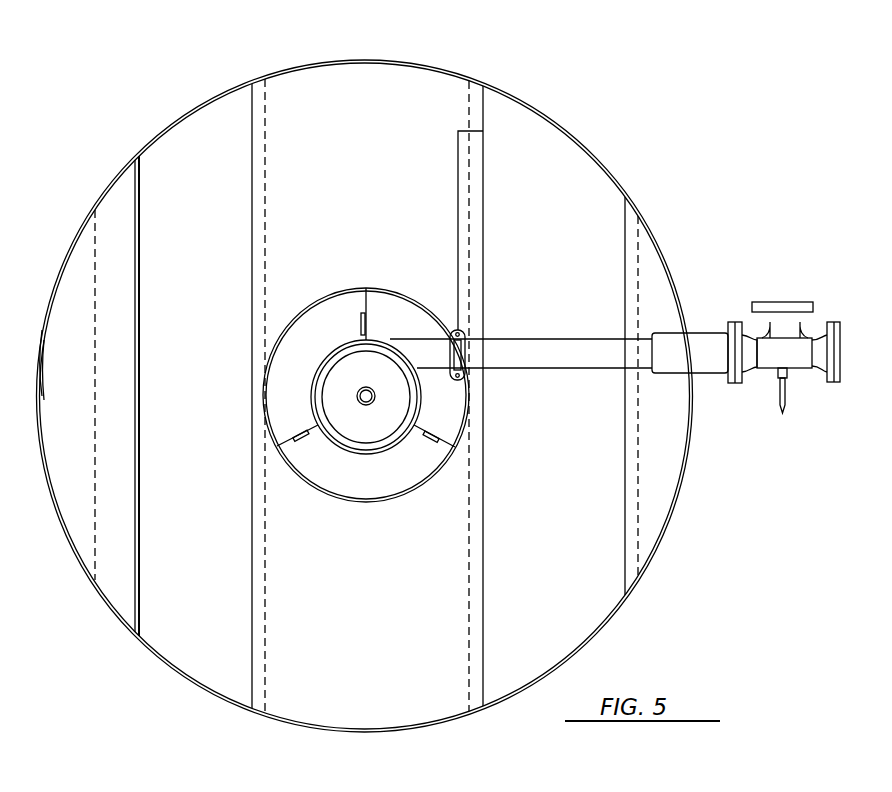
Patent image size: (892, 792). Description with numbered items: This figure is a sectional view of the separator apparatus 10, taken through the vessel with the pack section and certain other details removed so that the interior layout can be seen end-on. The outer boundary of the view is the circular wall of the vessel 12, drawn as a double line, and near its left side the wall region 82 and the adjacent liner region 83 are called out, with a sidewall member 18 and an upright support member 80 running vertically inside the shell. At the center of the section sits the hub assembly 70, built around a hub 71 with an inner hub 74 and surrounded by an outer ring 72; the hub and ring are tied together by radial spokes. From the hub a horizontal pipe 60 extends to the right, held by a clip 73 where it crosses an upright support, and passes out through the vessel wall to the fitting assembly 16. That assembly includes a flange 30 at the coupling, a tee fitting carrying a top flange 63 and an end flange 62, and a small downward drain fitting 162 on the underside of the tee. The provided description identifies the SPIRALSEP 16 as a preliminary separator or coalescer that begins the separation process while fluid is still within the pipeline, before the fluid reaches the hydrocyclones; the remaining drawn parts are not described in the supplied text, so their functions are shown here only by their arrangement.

The apparatus 10 is at (541, 92).
The tank shell 12 is at (360, 61).
The SPIRALSEP 16 is at (706, 322).
The sidewall member 18 is at (125, 207).
The flange 30 is at (735, 383).
The pipe 60 is at (490, 375).
The flange 62 is at (812, 322).
The flange 63 is at (768, 312).
The hub assembly 70 is at (337, 448).
The hub 71 is at (342, 348).
The ring 72 is at (403, 498).
The clip 73 is at (452, 330).
The inner hub 74 is at (320, 398).
The support member 80 is at (140, 257).
The shell wall 82 is at (40, 355).
The liner 83 is at (40, 372).
The drain needle 162 is at (787, 395).